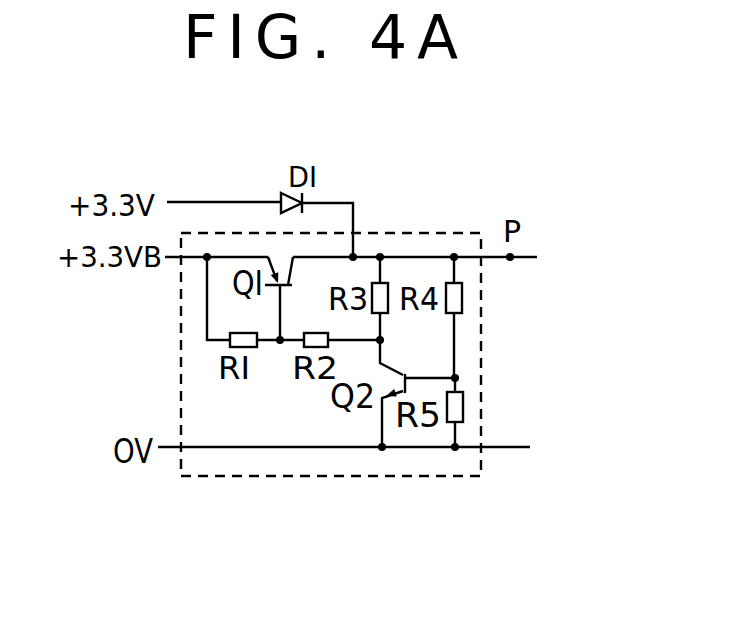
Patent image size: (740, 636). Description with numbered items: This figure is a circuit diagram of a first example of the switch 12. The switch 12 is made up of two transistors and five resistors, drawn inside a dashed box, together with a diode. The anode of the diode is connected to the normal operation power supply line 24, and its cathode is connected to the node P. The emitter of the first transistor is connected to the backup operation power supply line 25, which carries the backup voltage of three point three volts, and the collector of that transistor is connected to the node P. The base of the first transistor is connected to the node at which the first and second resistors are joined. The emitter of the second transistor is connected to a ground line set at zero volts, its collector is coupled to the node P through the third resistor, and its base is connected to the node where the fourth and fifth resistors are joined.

The switch 12 is at (413, 477).
The normal operation power supply line 24 is at (195, 202).
The backup operation power supply line 25 is at (176, 259).